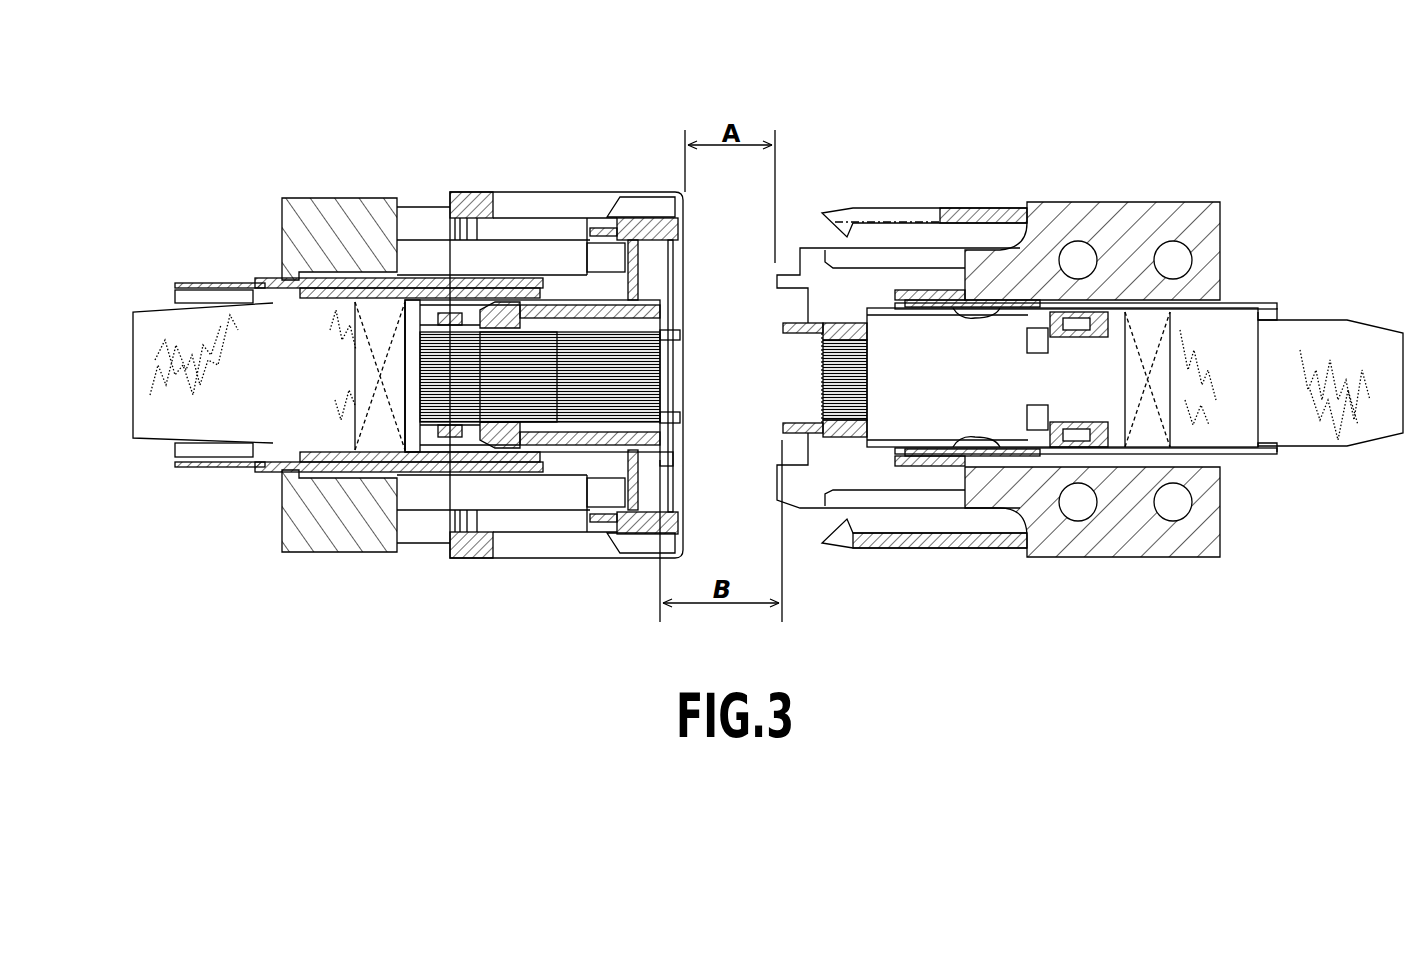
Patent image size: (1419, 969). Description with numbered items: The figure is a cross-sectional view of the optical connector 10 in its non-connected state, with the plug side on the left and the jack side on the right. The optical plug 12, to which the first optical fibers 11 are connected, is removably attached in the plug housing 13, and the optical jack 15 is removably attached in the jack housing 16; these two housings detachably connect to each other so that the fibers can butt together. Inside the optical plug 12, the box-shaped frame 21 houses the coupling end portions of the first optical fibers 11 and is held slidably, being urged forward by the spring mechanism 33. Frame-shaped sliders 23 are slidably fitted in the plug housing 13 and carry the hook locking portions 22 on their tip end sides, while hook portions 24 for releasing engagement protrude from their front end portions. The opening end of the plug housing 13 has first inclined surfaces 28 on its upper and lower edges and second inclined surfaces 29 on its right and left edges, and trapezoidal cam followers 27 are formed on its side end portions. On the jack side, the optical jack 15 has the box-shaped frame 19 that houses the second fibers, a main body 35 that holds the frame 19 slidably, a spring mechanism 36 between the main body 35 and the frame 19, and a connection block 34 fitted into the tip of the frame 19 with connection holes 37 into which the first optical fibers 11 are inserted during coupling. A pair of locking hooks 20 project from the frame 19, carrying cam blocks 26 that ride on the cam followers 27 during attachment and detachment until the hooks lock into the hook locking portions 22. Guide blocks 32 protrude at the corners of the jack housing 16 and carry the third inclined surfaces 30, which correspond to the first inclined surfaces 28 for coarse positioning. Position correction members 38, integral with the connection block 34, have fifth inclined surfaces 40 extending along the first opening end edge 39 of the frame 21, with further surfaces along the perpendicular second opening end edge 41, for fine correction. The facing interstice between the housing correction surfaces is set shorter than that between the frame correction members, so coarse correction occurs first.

The optical connector 10 is at (733, 86).
The first optical fibers 11 is at (655, 376).
The optical plug 12 is at (161, 452).
The plug housing 13 is at (355, 556).
The optical jack 15 is at (1362, 322).
The jack housing 16 is at (1162, 557).
The frame 19 is at (930, 323).
The locking hooks 20 is at (858, 212).
The frame 21 is at (648, 294).
The hook locking portions 22 is at (603, 226).
The sliders 23 is at (638, 487).
The hook portions 24 is at (682, 336).
The cam blocks 26 is at (843, 215).
The cam followers 27 is at (645, 198).
The first inclined surfaces 28 is at (682, 238).
The second inclined surfaces 29 is at (673, 465).
The third inclined surfaces 30 is at (788, 270).
The guide blocks 32 is at (792, 270).
The spring mechanism 33 is at (356, 372).
The connection block 34 is at (838, 325).
The main body 35 is at (1243, 303).
The spring mechanism 36 is at (1175, 383).
The connection holes 37 is at (868, 373).
The position correction members 38 is at (803, 335).
The first opening end edge 39 is at (663, 316).
The fifth inclined surfaces 40 is at (788, 323).
The second opening end edge 41 is at (655, 430).